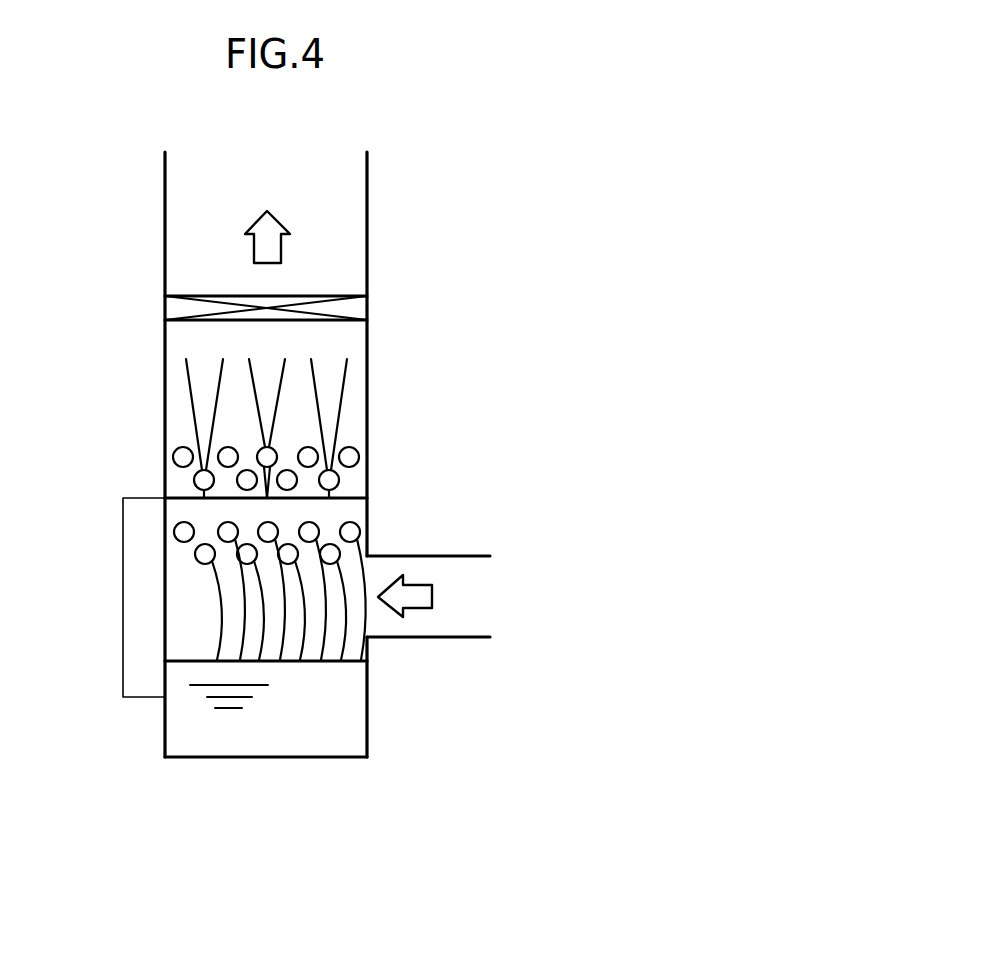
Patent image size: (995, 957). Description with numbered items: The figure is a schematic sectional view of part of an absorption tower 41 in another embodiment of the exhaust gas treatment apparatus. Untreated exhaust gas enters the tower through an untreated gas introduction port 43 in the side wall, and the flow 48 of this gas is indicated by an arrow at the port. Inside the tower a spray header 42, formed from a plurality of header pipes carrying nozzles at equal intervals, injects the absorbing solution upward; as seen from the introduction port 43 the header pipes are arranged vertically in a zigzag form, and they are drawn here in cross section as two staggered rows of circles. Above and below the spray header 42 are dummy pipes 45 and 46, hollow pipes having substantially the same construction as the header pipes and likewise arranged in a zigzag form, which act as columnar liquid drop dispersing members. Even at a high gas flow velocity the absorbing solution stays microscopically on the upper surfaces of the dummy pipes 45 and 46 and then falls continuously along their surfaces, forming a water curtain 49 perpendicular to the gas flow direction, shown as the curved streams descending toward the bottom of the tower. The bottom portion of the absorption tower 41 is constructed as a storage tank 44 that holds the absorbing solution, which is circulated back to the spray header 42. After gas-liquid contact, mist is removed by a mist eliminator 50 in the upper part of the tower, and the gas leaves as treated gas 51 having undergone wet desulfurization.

The absorption tower 41 is at (370, 232).
The spray header 42 is at (378, 505).
The untreated gas introduction port 43 is at (390, 623).
The storage tank 44 is at (283, 734).
The dummy pipe 45 is at (173, 457).
The dummy pipe 46 is at (173, 539).
The inlet gas flow 48 is at (432, 597).
The water curtain 49 is at (217, 647).
The mist eliminator 50 is at (282, 296).
The treated gas 51 is at (267, 212).